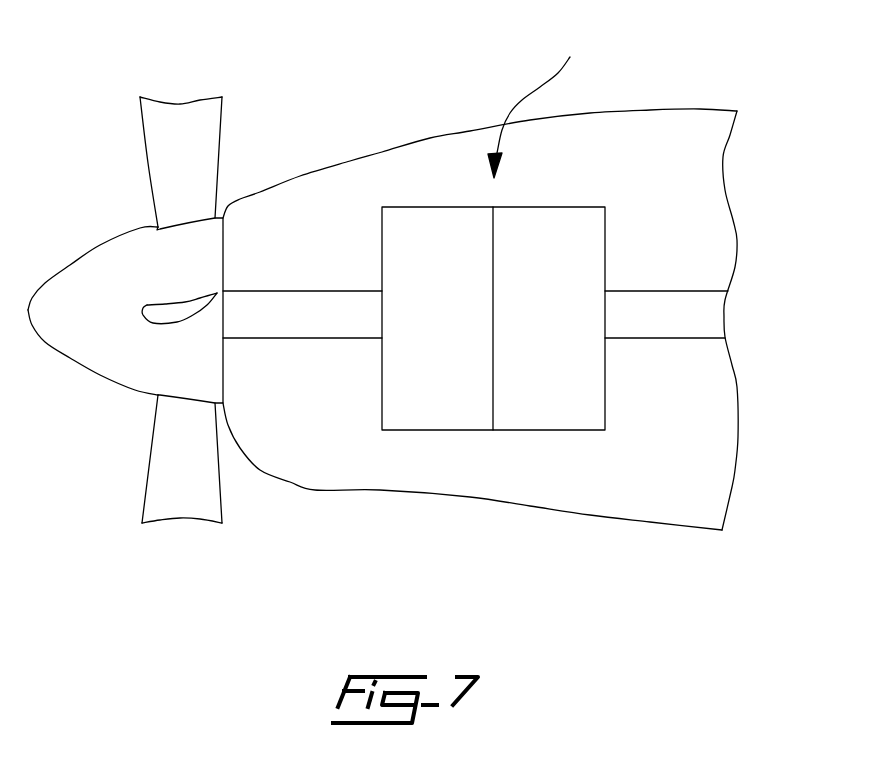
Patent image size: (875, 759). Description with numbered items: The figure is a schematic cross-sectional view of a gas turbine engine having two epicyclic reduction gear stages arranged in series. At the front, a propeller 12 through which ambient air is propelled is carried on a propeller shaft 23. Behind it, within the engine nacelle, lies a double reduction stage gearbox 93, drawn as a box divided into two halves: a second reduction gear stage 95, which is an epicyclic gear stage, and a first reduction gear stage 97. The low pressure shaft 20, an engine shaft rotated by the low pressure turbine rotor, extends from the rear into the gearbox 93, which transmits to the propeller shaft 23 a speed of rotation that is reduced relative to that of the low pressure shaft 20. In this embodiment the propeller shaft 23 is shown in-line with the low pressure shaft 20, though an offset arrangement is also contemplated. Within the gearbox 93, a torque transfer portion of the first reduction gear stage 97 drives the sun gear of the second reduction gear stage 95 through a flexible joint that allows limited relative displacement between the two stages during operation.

The propeller 12 is at (143, 367).
The low pressure shaft 20 is at (672, 303).
The propeller shaft 23 is at (318, 315).
The double reduction stage gearbox 93 is at (542, 104).
The second reduction gear stage 95 is at (425, 207).
The first reduction gear stage 97 is at (553, 207).